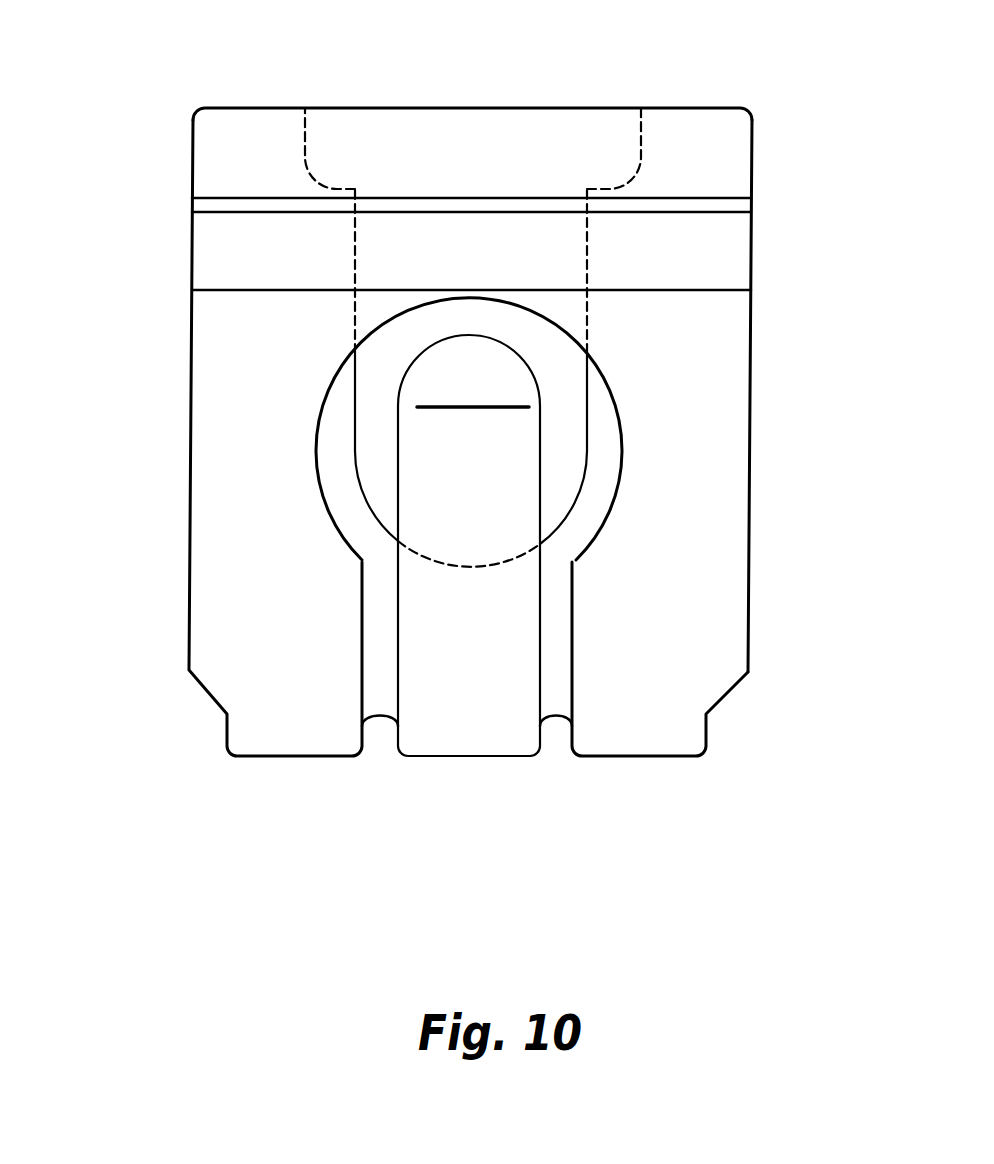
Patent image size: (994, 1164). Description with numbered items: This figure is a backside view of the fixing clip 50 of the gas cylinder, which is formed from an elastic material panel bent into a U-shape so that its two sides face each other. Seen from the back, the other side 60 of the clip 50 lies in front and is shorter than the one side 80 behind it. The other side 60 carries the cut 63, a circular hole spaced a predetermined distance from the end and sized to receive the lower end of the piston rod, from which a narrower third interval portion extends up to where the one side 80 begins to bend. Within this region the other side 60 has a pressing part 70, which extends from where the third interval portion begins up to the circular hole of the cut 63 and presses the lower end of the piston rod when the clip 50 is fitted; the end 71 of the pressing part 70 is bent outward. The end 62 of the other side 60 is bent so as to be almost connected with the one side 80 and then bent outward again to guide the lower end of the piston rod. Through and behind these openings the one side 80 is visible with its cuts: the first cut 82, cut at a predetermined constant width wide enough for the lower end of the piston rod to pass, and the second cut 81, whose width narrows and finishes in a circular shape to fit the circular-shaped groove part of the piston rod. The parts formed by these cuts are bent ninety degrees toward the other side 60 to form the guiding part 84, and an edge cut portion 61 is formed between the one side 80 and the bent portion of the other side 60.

The fixing clip 50 is at (160, 445).
The other side 60 is at (722, 546).
The edge cut portion 61 is at (727, 697).
The end of the other side 62 is at (718, 253).
The cut 63 is at (622, 453).
The pressing part 70 is at (435, 500).
The end of the pressing part 71 is at (435, 376).
The one side 80 is at (555, 697).
The second cut 81 is at (567, 512).
The first cut 82 is at (625, 172).
The guiding part 84 is at (222, 147).